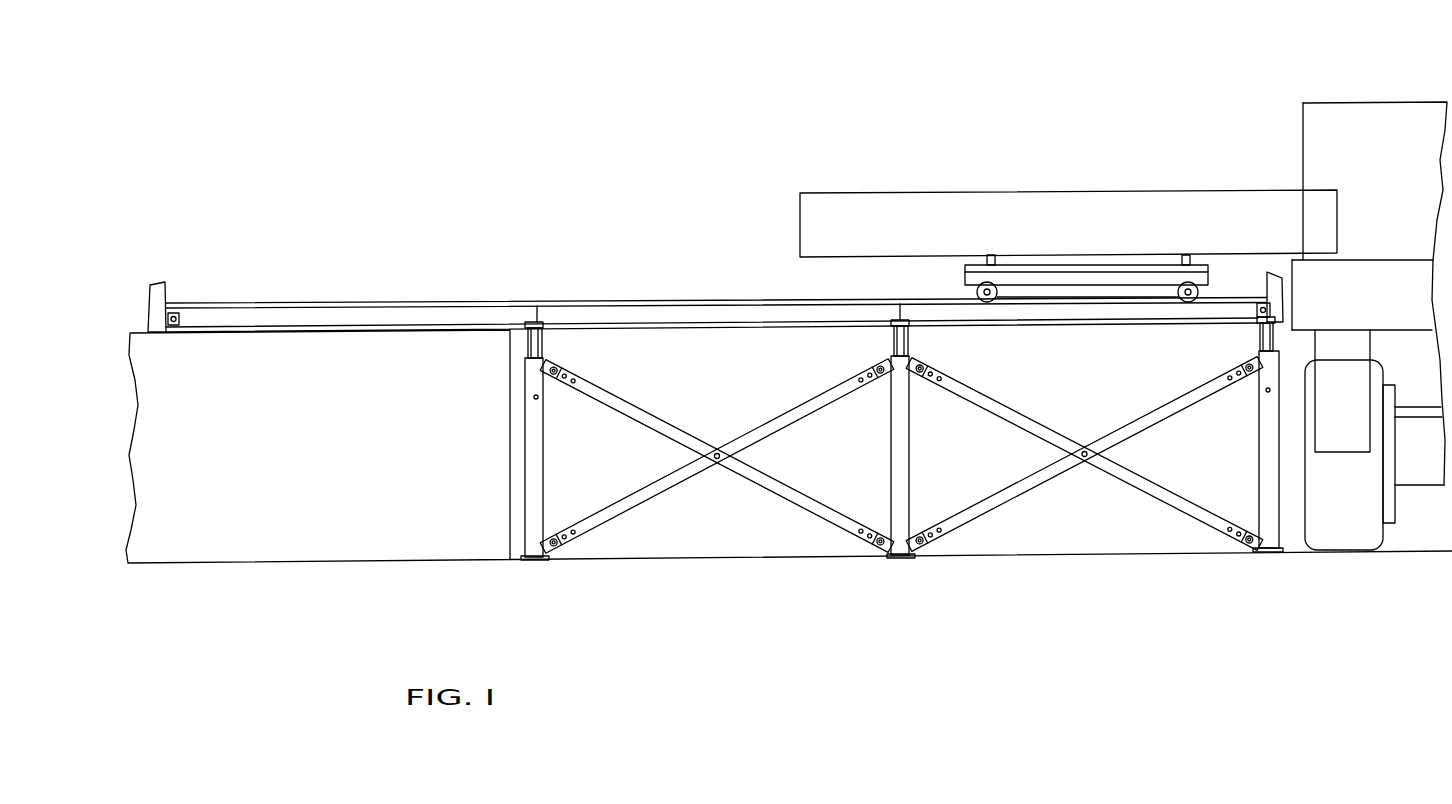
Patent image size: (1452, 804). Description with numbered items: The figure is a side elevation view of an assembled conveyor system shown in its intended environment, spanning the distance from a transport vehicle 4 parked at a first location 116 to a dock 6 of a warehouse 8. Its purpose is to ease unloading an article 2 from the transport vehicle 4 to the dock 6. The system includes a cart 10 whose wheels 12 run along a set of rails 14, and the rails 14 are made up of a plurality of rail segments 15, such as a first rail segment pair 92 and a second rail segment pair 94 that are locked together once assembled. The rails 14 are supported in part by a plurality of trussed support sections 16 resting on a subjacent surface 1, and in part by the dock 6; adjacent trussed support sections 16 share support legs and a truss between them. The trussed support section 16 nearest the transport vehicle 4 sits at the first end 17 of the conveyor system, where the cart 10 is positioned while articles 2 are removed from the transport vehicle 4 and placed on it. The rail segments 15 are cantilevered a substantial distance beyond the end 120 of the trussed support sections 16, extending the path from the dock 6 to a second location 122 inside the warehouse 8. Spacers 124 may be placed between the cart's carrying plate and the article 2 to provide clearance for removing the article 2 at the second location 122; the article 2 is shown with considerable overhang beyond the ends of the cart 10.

The subjacent surface 1 is at (862, 608).
The article 2 is at (972, 202).
The transport vehicle 4 is at (1313, 135).
The dock 6 is at (367, 347).
The warehouse 8 is at (183, 218).
The cart 10 is at (973, 278).
The wheels 12 is at (996, 299).
The rails 14 is at (675, 297).
The rail segments 15 is at (600, 318).
The trussed support sections 16 is at (702, 427).
The first end 17 is at (1272, 183).
The first rail segment pair 92 is at (768, 316).
The second rail segment pair 94 is at (1090, 313).
The first location 116 is at (1315, 98).
The end of the trussed support sections 120 is at (521, 343).
The second location 122 is at (173, 295).
The spacers 124 is at (993, 257).